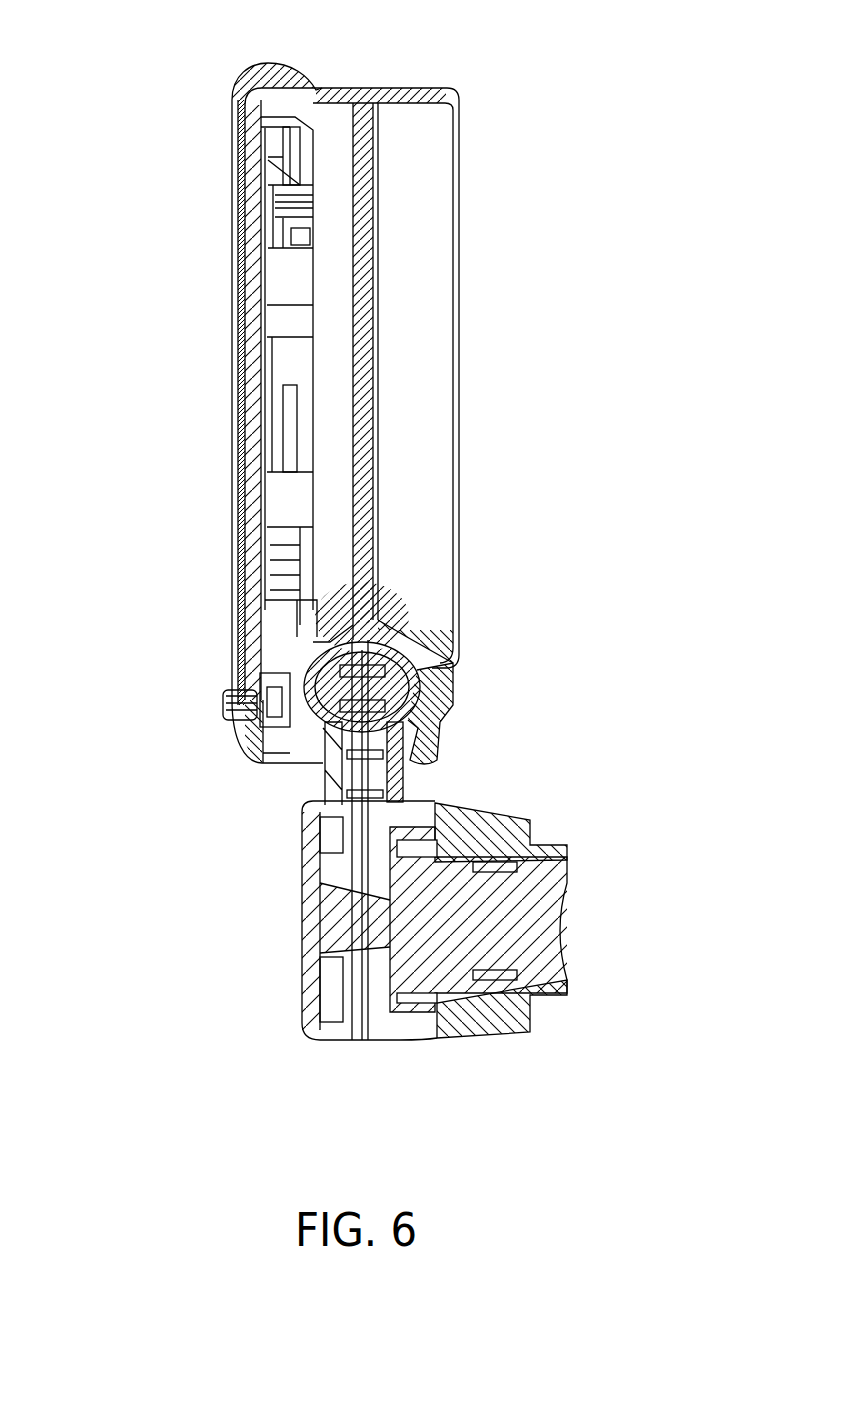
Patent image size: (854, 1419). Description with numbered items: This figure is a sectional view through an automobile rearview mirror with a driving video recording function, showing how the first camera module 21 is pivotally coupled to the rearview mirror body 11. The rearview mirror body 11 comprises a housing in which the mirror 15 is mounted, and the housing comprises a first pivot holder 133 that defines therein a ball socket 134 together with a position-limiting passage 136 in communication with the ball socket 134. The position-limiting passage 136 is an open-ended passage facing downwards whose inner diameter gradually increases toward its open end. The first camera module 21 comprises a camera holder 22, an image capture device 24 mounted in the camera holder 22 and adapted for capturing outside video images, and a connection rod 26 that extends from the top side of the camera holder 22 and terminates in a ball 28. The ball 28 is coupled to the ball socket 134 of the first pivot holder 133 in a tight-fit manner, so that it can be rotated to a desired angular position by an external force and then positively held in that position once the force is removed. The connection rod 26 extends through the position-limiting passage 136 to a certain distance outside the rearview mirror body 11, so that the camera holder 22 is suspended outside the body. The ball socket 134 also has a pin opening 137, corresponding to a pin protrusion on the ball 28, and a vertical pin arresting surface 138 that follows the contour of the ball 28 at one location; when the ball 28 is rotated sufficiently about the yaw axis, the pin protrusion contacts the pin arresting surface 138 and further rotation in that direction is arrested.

The rearview mirror body 11 is at (452, 92).
The mirror 15 is at (240, 277).
The ball 28 is at (232, 615).
The first pivot holder 133 is at (453, 672).
The pin arresting surface 138 is at (427, 693).
The ball socket 134 is at (457, 717).
The pin opening 137 is at (235, 725).
The position-limiting passage 136 is at (318, 757).
The connection rod 26 is at (323, 775).
The first camera module 21 is at (538, 915).
The camera holder 22 is at (440, 801).
The image capture device 24 is at (568, 927).